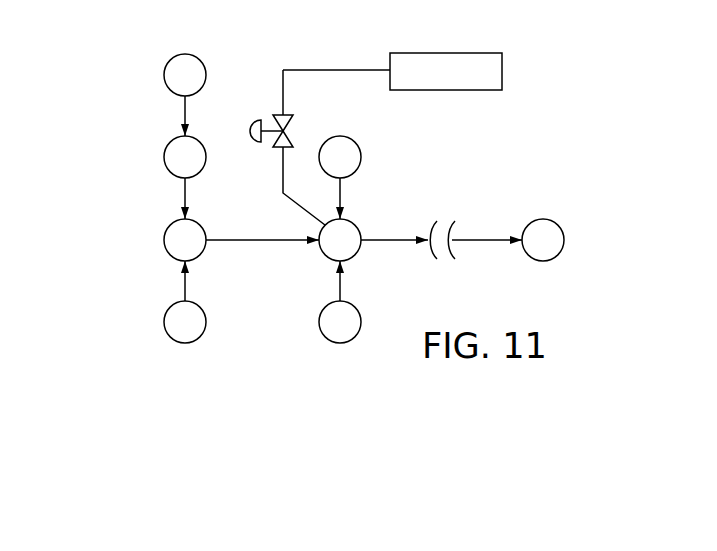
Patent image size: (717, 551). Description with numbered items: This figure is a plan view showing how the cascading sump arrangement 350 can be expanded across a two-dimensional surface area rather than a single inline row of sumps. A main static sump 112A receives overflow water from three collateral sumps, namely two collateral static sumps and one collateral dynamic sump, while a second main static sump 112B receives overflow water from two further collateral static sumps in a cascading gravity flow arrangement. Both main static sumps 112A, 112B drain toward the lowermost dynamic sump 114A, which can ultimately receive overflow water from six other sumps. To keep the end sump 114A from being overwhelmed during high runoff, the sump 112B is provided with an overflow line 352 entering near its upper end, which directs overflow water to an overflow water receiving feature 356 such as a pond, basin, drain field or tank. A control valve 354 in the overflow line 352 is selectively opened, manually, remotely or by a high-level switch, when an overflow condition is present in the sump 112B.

The static sump 112A is at (167, 232).
The static sump 112B is at (355, 224).
The dynamic sump 114A is at (558, 226).
The cascading sump arrangement 350 is at (516, 161).
The overflow line 352 is at (335, 70).
The control valve 354 is at (283, 115).
The overflow water receiving feature 356 is at (450, 53).